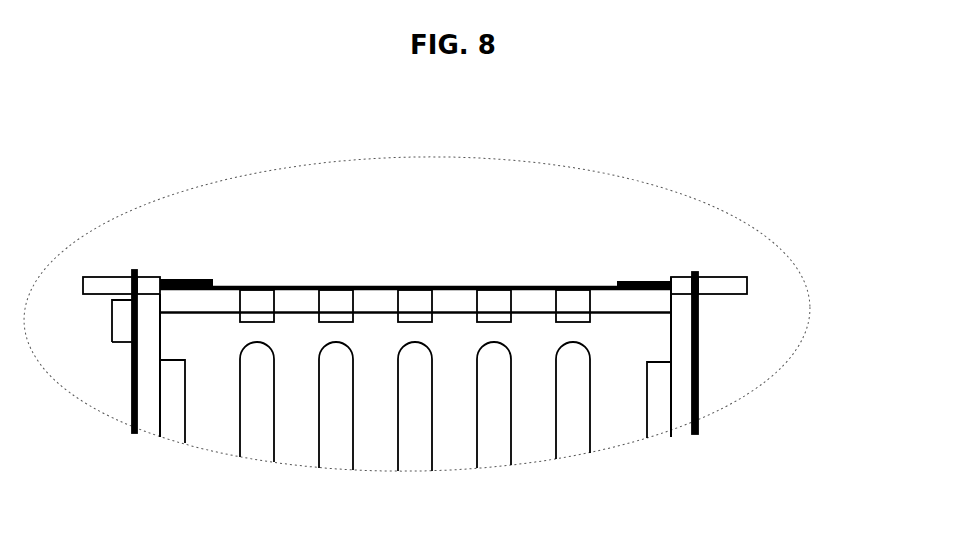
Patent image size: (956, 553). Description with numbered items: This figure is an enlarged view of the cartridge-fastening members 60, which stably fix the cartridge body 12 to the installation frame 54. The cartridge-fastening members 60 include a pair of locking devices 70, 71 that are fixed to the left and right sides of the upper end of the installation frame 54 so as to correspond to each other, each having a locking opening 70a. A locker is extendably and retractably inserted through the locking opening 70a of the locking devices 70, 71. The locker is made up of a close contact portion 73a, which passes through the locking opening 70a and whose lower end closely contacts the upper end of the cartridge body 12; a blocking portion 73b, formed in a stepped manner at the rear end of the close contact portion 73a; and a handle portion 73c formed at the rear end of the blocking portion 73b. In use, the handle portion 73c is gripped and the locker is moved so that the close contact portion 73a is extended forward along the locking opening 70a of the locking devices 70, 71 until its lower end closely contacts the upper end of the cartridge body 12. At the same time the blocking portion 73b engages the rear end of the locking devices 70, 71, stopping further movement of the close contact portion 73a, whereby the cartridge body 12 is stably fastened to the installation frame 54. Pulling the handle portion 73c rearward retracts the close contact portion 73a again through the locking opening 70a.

The cartridge body 12 is at (680, 328).
The installation frame 54 is at (683, 390).
The cartridge-fastening members 60 is at (780, 292).
The locking device 70 is at (147, 277).
The locking opening 70a is at (690, 277).
The locking device 71 is at (678, 277).
The close contact portion 73a is at (625, 283).
The blocking portion 73b is at (700, 272).
The handle portion 73c is at (748, 279).